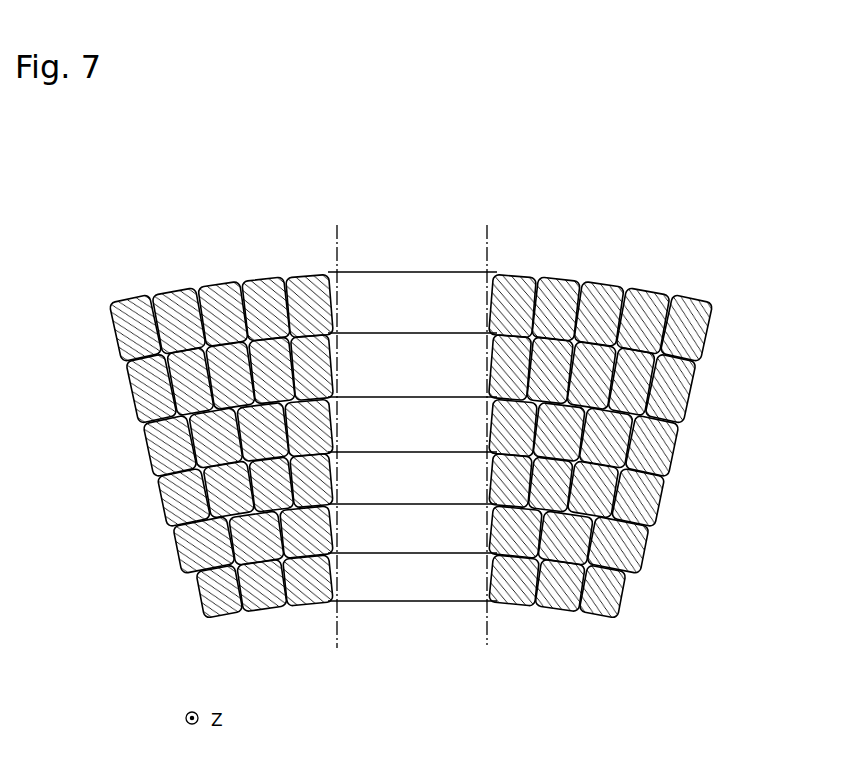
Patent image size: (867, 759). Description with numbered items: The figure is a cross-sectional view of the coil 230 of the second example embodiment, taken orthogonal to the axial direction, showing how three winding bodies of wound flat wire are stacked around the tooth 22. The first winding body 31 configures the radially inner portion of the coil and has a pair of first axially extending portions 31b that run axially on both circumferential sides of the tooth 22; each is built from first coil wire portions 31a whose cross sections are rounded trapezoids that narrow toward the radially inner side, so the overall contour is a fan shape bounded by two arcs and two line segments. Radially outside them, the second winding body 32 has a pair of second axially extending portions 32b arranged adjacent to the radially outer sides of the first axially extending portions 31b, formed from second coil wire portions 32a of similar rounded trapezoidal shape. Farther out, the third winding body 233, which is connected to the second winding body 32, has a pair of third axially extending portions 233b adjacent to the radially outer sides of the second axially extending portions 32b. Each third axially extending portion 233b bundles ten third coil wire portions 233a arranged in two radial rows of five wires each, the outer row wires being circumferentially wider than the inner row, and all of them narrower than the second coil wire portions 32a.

The coil 230 is at (548, 181).
The third winding body 233 is at (712, 296).
The third coil wire portion 233a is at (685, 306).
The third axially extending portion 233b is at (232, 268).
The second winding body 32 is at (688, 412).
The second coil wire portion 32a is at (630, 508).
The second axially extending portion 32b is at (158, 505).
The first winding body 31 is at (657, 527).
The first coil wire portion 31a is at (588, 602).
The first axially extending portion 31b is at (264, 612).
The tooth 22 is at (337, 645).